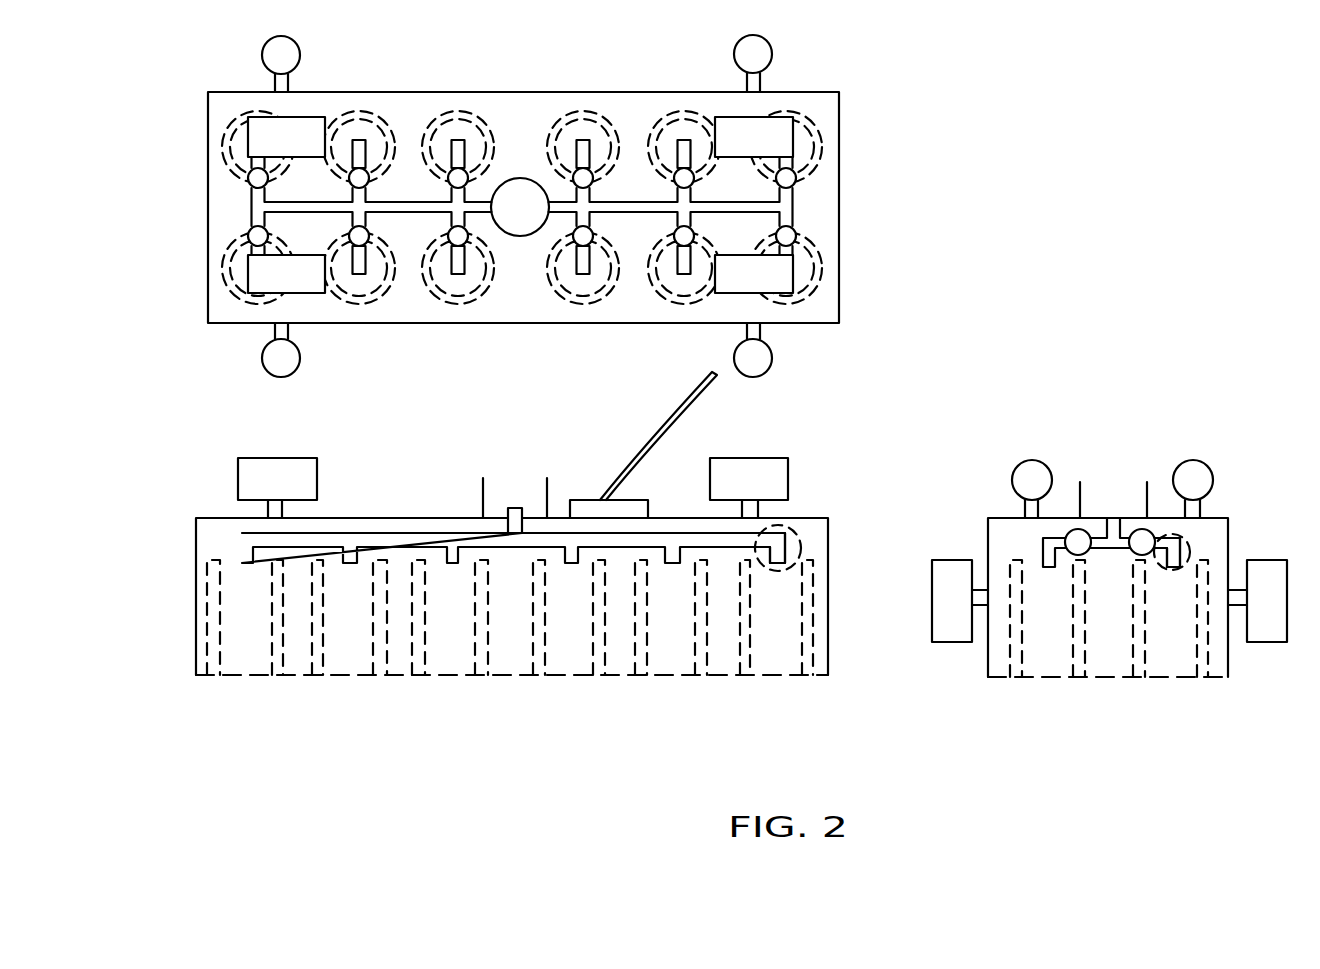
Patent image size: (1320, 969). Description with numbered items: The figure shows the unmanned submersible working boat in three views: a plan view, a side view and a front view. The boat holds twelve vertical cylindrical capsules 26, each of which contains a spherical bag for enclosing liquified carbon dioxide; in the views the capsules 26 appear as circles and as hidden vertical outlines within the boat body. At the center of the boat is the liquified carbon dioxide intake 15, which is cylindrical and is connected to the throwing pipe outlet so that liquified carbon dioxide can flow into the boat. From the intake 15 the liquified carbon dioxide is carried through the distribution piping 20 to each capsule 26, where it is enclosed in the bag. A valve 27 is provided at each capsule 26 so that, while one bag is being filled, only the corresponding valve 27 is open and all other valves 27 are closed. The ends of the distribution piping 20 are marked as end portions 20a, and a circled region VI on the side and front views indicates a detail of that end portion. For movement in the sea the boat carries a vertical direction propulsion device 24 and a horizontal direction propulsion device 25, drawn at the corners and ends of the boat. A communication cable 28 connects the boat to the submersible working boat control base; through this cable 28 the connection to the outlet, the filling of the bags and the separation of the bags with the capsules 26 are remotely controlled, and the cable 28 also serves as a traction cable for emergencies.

The liquified CO2 intake 15 is at (521, 178).
The distribution piping 20 is at (633, 202).
The end leg of conductor rail 20a is at (776, 563).
The vertical direction propulsion device 24 is at (300, 52).
The horizontal direction propulsion device 25 is at (282, 128).
The capsule 26 is at (462, 292).
The valve 27 is at (449, 176).
The communication cable 28 is at (676, 420).
The section line VI is at (799, 543).